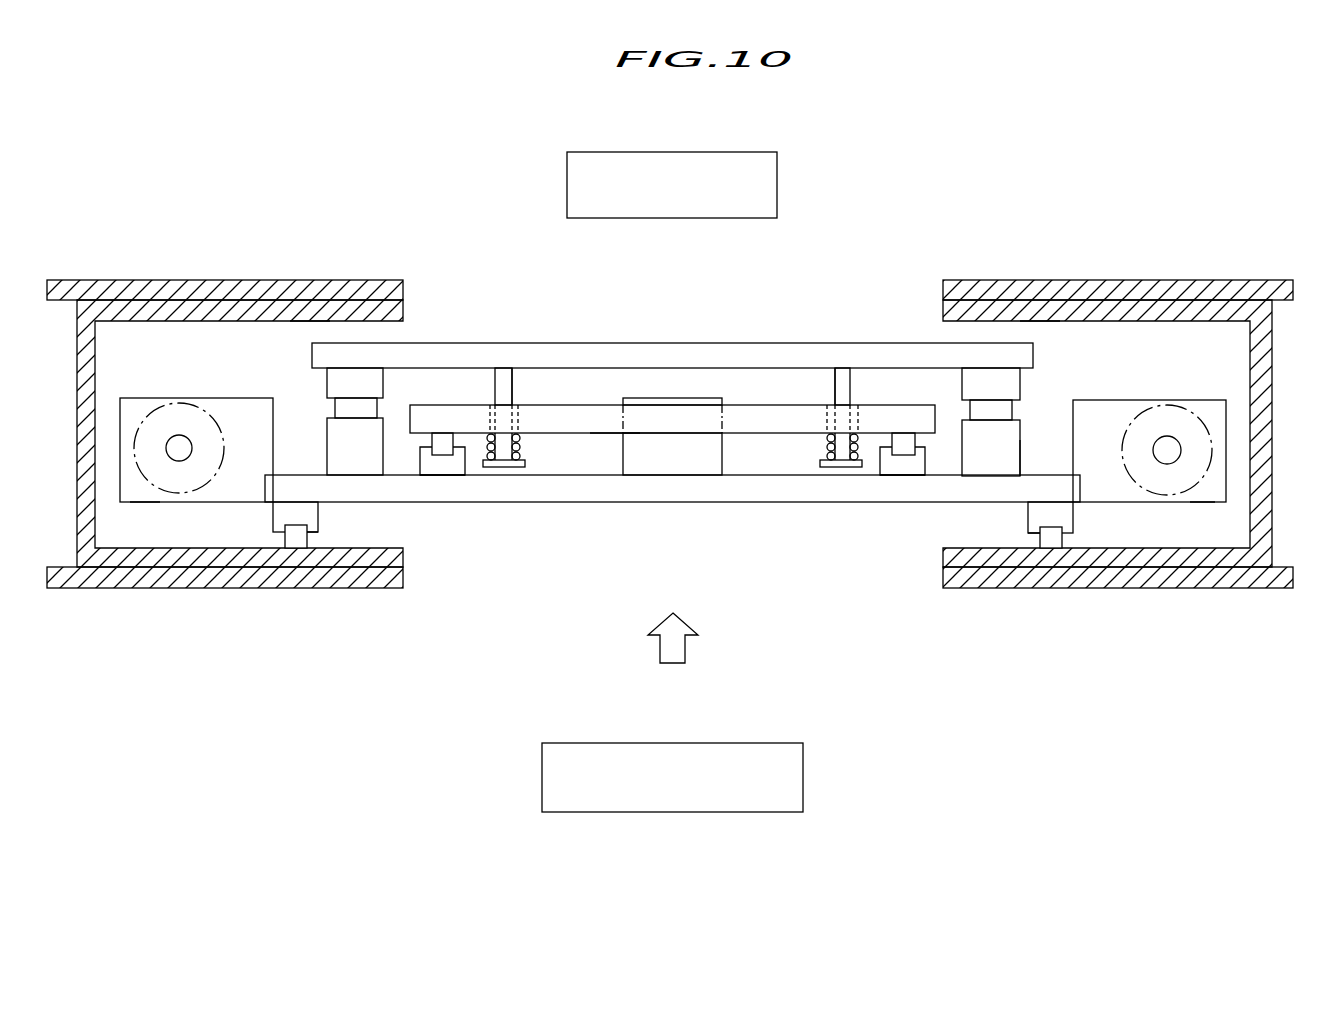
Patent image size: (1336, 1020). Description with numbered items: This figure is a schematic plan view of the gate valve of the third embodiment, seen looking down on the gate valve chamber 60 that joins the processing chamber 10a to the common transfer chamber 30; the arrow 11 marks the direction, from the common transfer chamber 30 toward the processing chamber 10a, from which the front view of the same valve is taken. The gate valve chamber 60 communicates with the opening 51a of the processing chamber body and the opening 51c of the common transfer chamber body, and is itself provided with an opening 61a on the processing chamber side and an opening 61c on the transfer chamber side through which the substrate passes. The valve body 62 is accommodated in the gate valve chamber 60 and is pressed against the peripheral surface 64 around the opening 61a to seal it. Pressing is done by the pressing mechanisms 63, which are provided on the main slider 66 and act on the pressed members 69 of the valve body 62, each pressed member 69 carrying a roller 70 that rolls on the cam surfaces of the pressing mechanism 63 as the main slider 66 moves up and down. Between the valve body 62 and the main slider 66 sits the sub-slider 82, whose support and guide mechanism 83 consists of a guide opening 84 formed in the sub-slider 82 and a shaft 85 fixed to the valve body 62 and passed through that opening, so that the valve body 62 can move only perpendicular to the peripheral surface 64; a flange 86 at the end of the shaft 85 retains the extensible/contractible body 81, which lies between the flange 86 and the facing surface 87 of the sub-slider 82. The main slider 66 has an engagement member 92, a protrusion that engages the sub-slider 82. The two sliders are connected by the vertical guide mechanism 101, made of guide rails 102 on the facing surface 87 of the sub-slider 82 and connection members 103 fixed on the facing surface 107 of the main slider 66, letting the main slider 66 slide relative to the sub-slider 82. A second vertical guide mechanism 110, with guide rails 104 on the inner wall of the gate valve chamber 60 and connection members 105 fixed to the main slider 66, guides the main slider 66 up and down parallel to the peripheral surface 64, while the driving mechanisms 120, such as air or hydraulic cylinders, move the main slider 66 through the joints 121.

The processing chamber 10a is at (777, 173).
The common transfer chamber 30 is at (803, 763).
The arrow 11 is at (673, 655).
The opening 51a is at (403, 283).
The opening 51c is at (405, 580).
The gate valve chamber 60 is at (1260, 430).
The opening 61a is at (403, 308).
The opening 61c is at (405, 560).
The peripheral surface 64 is at (305, 322).
The valve body 62 is at (698, 348).
The pressed member 69 is at (320, 388).
The roller 70 is at (335, 405).
The pressing mechanism 63 is at (388, 458).
The facing surface 107 is at (1028, 470).
The main slider 66 is at (702, 493).
The driving mechanism 120 is at (167, 405).
The joint 121 is at (145, 503).
The connection member 105 is at (275, 516).
The guide rail 104 is at (307, 545).
The vertical guide mechanism 110 is at (270, 533).
The sub-slider 82 is at (607, 413).
The engagement member 92 is at (653, 466).
The facing surface 87 is at (612, 434).
The support and guide mechanism 83 is at (490, 386).
The shaft 85 is at (512, 382).
The guide opening 84 is at (520, 418).
The extensible/contractible body 81 is at (523, 446).
The flange 86 is at (513, 468).
The guide rail 102 is at (442, 433).
The vertical guide mechanism 101 is at (472, 468).
The connection member 103 is at (455, 468).